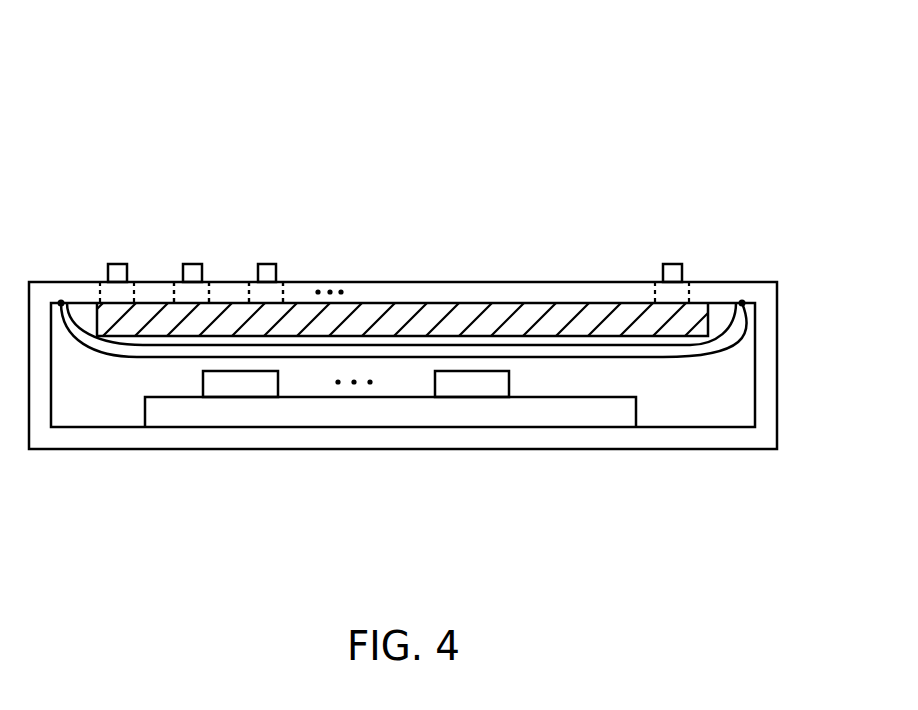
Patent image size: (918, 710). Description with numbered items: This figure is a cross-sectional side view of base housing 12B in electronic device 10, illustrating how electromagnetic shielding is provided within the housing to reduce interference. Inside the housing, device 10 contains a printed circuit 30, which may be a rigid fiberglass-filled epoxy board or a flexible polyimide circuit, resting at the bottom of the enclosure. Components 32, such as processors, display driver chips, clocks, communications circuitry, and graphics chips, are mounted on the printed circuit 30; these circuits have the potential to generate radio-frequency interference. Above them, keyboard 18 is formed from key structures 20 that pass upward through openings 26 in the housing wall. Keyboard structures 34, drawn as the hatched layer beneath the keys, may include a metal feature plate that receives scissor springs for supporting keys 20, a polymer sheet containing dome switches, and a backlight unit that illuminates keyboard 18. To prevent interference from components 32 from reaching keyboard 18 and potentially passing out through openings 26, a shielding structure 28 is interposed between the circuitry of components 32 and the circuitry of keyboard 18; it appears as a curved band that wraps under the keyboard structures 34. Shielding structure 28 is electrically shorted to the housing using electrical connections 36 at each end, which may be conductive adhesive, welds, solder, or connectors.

The device 10 is at (766, 59).
The keyboard 18 is at (385, 230).
The base housing 12B is at (542, 290).
The key structures 20 is at (192, 263).
The openings 26 is at (210, 292).
The keyboard structures 34 is at (627, 312).
The shielding structure 28 is at (695, 353).
The electrical connections 36 is at (61, 303).
The components 32 is at (435, 385).
The printed circuit 30 is at (635, 410).